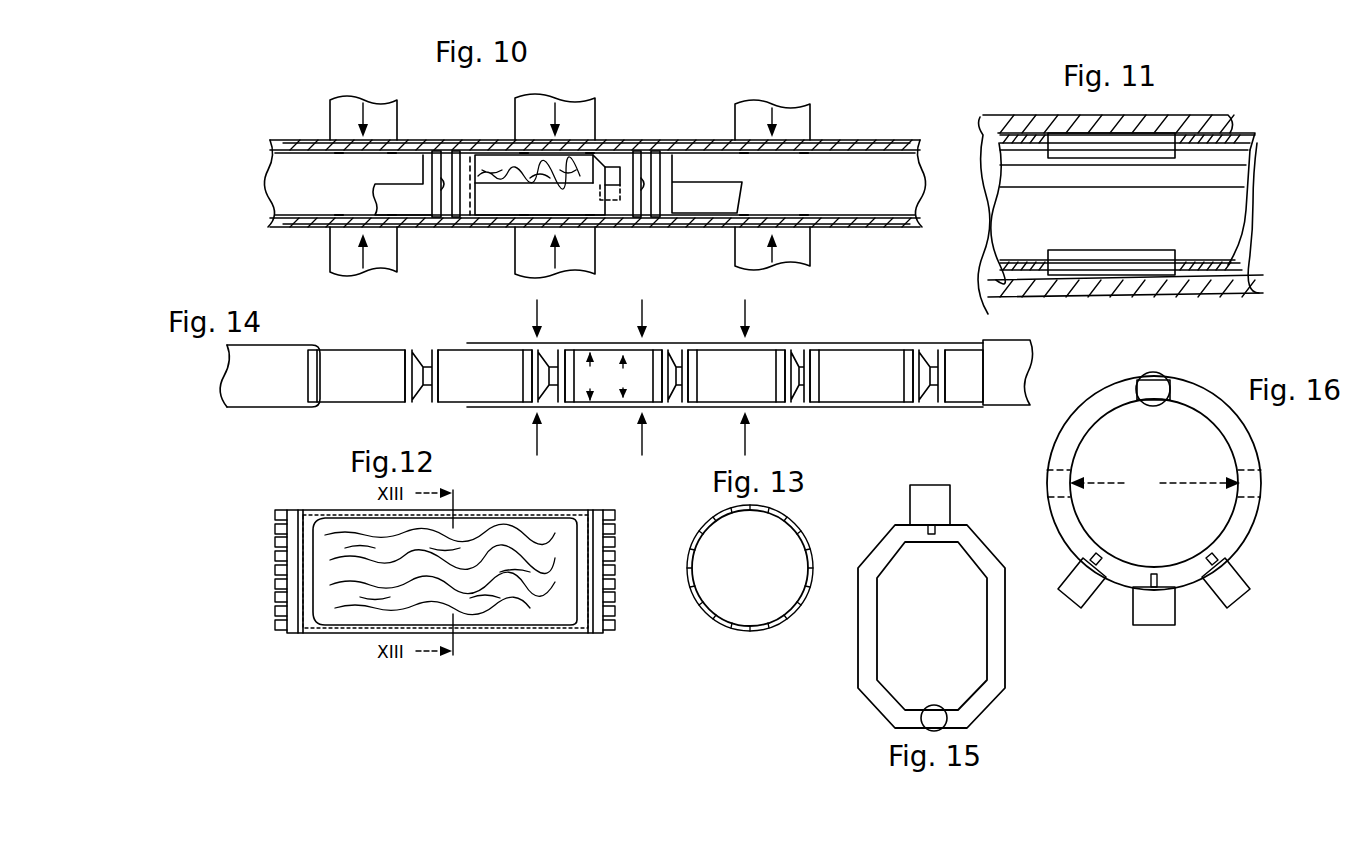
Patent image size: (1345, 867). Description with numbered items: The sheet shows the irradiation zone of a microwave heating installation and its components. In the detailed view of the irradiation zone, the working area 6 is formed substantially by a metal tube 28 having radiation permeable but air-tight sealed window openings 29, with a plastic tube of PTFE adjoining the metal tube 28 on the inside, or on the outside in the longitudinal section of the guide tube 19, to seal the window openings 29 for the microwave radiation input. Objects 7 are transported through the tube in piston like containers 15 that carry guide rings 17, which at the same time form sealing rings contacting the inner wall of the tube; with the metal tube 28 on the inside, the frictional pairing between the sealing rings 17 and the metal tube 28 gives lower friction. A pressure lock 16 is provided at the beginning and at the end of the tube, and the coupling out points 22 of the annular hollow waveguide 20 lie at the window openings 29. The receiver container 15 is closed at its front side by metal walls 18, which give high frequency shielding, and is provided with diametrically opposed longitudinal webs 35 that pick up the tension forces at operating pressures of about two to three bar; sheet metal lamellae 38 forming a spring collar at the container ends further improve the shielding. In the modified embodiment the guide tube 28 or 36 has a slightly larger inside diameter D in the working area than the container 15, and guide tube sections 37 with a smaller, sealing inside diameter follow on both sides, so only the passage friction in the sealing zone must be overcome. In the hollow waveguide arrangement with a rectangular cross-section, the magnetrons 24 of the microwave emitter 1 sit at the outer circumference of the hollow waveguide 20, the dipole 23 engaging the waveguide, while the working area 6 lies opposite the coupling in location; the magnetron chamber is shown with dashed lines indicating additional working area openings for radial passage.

In FIG. 10, the microwave emitter 1 is at (306, 254).
In FIG. 10, the working area 6 is at (620, 155).
In FIG. 14, the working area 6 is at (680, 349).
In FIG. 10, the object 7 is at (508, 178).
In FIG. 10, the container 15 is at (400, 198).
In FIG. 14, the container 15 is at (710, 388).
In FIG. 12, the container 15 is at (562, 496).
In FIG. 13, the container 15 is at (800, 510).
In FIG. 14, the pressure lock 16 is at (490, 386).
In FIG. 12, the pressure lock 16 is at (445, 571).
In FIG. 10, the guide ring 17 is at (456, 200).
In FIG. 14, the guide ring 17 is at (317, 392).
In FIG. 12, the guide ring 17 is at (297, 630).
In FIG. 13, the metal wall 18 is at (730, 578).
In FIG. 10, the guide tube 19 is at (858, 118).
In FIG. 11, the guide tube 19 is at (1205, 104).
In FIG. 14, the guide tube 19 is at (1038, 361).
In FIG. 10, the annular hollow waveguide 20 is at (392, 252).
In FIG. 15, the annular hollow waveguide 20 is at (995, 605).
In FIG. 16, the annular hollow waveguide 20 is at (1240, 531).
In FIG. 15, the coupling out location 22 is at (940, 692).
In FIG. 16, the coupling out location 22 is at (1146, 362).
In FIG. 15, the dipole 23 is at (933, 536).
In FIG. 16, the dipole 23 is at (1152, 574).
In FIG. 15, the magnetron 24 is at (943, 509).
In FIG. 16, the magnetron 24 is at (1142, 610).
In FIG. 10, the metal tube 28 is at (903, 193).
In FIG. 11, the metal tube 28 is at (1018, 220).
In FIG. 10, the window opening 29 is at (378, 140).
In FIG. 11, the window opening 29 is at (1118, 262).
In FIG. 14, the window opening 29 is at (552, 332).
In FIG. 12, the longitudinal web 35 is at (480, 512).
In FIG. 13, the longitudinal web 35 is at (760, 515).
In FIG. 10, the guide tube 36 is at (887, 228).
In FIG. 11, the guide tube 36 is at (995, 252).
In FIG. 14, the guide tube section 37 is at (418, 412).
In FIG. 12, the sheet metal lamellae 38 is at (282, 510).
In FIG. 13, the sheet metal lamellae 38 is at (782, 628).